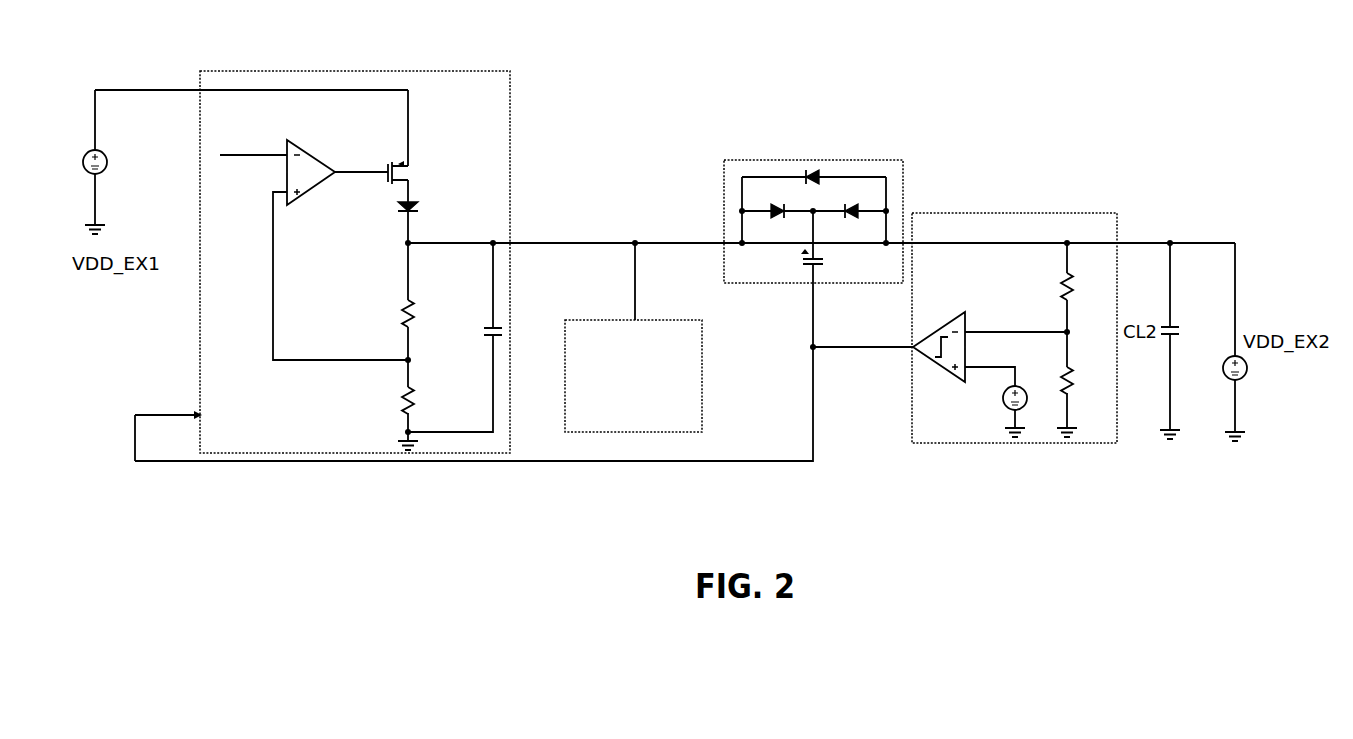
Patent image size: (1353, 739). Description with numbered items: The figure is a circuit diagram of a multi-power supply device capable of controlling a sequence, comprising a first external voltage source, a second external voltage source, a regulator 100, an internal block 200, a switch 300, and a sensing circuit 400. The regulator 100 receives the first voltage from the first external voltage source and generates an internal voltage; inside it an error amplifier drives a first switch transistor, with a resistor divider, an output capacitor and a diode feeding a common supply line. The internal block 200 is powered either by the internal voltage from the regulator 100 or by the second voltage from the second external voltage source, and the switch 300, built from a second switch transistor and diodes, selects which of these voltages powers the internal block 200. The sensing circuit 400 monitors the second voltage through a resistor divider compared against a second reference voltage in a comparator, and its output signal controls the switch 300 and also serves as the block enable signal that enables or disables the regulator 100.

The regulator 100 is at (393, 70).
The internal block 200 is at (647, 320).
The switch 300 is at (840, 157).
The sensing circuit 400 is at (1067, 212).